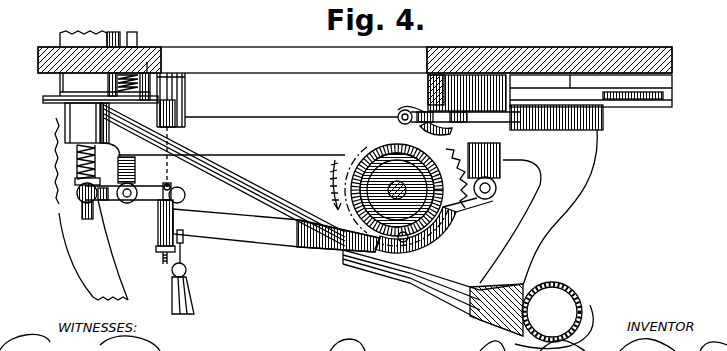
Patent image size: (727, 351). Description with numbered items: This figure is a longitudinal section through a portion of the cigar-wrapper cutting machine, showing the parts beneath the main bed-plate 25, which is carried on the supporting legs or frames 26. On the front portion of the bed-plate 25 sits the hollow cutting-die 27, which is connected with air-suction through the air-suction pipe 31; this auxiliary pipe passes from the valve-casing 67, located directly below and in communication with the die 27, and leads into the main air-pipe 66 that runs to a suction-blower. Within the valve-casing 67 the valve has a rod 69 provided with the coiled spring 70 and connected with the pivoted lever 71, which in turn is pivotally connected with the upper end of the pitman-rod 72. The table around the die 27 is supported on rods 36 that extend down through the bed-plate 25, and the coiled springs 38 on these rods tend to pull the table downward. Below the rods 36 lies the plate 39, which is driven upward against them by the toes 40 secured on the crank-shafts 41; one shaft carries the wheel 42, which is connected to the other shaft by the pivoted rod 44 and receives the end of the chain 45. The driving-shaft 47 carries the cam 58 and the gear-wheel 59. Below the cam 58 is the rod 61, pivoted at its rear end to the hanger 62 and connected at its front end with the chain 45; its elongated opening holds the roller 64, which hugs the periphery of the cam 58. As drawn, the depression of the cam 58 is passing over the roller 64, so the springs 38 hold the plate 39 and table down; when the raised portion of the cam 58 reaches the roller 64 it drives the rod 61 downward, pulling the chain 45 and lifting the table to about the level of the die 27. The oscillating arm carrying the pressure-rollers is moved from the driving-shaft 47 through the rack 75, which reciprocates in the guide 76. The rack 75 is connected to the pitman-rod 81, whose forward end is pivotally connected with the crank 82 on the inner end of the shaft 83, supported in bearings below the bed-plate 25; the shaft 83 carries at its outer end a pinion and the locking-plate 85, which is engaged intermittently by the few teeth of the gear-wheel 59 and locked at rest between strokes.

The main bed-plate 25 is at (261, 49).
The supporting legs or frames 26 is at (538, 239).
The cutting-die 27 is at (90, 30).
The air-suction pipe 31 is at (278, 195).
The rods 36 is at (142, 34).
The coiled springs 38 is at (148, 72).
The plate 39 is at (87, 69).
The toes 40 is at (62, 118).
The crank-shafts 41 is at (58, 101).
The wheel 42 is at (186, 103).
The pivoted rod 44 is at (186, 92).
The chain 45 is at (176, 170).
The driving-shaft 47 is at (343, 190).
The cam 58 is at (360, 157).
The gear-wheel 59 is at (463, 212).
The rod 61 is at (344, 250).
The hanger 62 is at (494, 171).
The roller 64 is at (398, 243).
The main air-pipe 66 is at (587, 289).
The valve-casing 67 is at (105, 86).
The valve rod 69 is at (90, 203).
The coiled spring 70 is at (77, 162).
The pivoted lever 71 is at (96, 219).
The pitman-rod 72 is at (183, 257).
The rack 75 is at (603, 125).
The guide 76 is at (663, 95).
The pitman-rod 81 is at (459, 117).
The crank 82 is at (408, 108).
The shaft 83 is at (453, 52).
The locking-plate 85 is at (432, 140).